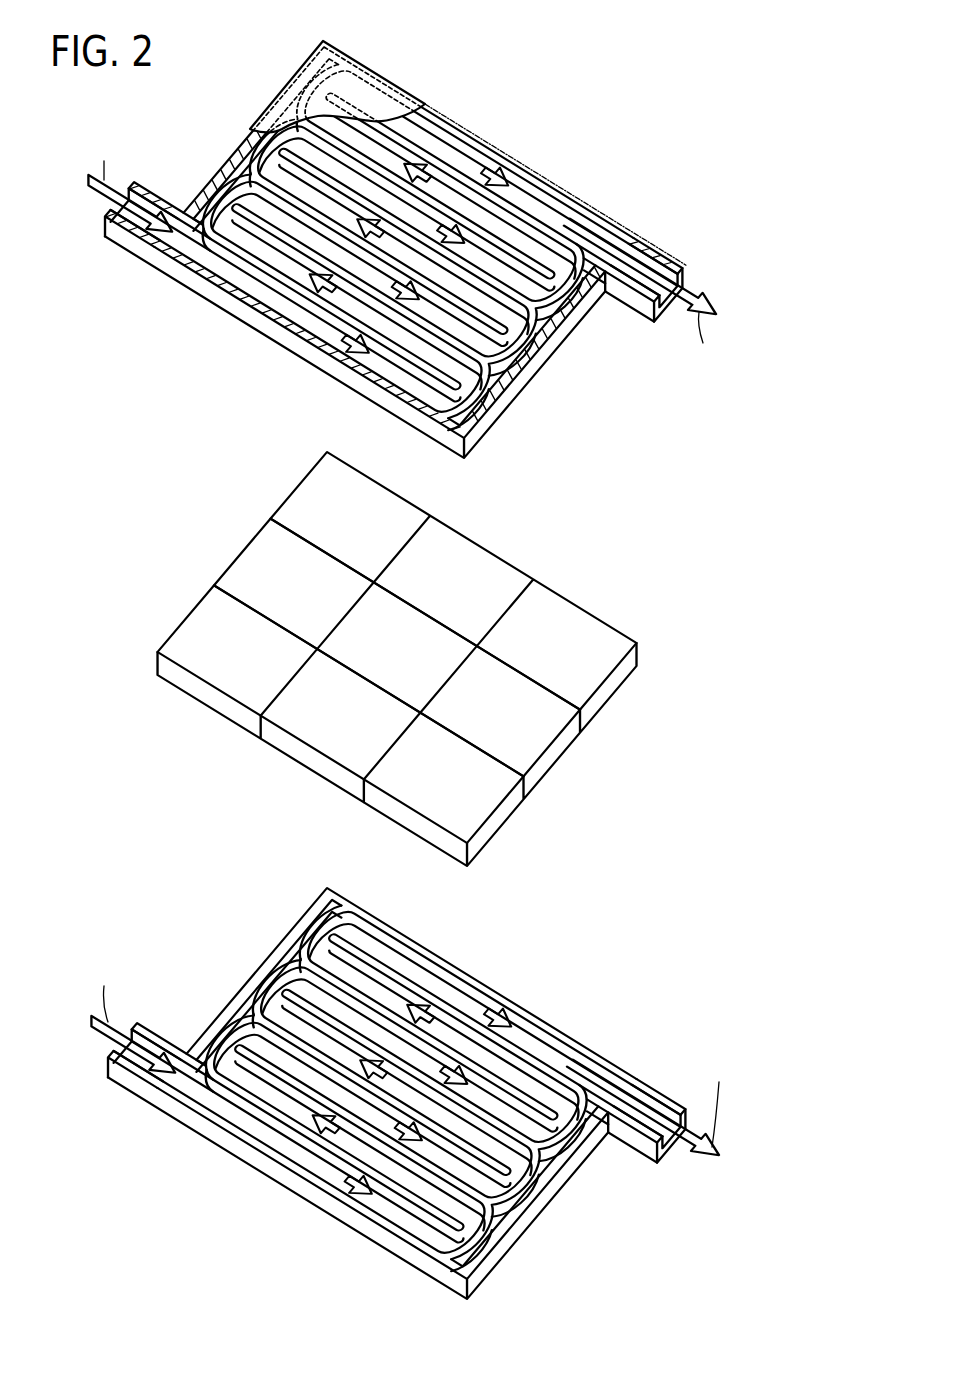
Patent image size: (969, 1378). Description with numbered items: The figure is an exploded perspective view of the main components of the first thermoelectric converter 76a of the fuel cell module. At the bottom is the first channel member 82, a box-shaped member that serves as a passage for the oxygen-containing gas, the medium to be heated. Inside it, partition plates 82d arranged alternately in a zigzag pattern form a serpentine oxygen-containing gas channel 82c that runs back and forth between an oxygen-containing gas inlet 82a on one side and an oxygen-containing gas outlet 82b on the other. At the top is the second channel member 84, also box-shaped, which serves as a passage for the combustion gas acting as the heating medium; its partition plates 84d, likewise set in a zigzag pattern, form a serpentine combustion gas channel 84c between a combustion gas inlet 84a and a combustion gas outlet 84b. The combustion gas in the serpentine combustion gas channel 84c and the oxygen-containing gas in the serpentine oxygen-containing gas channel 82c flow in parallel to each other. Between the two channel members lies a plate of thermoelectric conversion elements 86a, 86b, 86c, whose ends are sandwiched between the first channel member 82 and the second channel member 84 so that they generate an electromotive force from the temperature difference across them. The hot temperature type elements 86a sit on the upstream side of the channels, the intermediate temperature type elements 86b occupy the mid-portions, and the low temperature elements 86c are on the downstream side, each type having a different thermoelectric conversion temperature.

The first thermoelectric converter 76a is at (70, 111).
The second channel member 84 is at (416, 248).
The combustion gas inlet 84a is at (120, 232).
The combustion gas outlet 84b is at (634, 293).
The serpentine combustion gas channel 84c is at (439, 314).
The partition plates 84d is at (500, 254).
The thermoelectric conversion elements 86a is at (467, 753).
The thermoelectric conversion elements 86b is at (548, 701).
The thermoelectric conversion elements 86c is at (580, 620).
The first channel member 82 is at (409, 1088).
The oxygen-containing gas inlet 82a is at (123, 1081).
The oxygen-containing gas outlet 82b is at (633, 1142).
The serpentine oxygen-containing gas channel 82c is at (262, 1010).
The partition plates 82d is at (500, 1103).